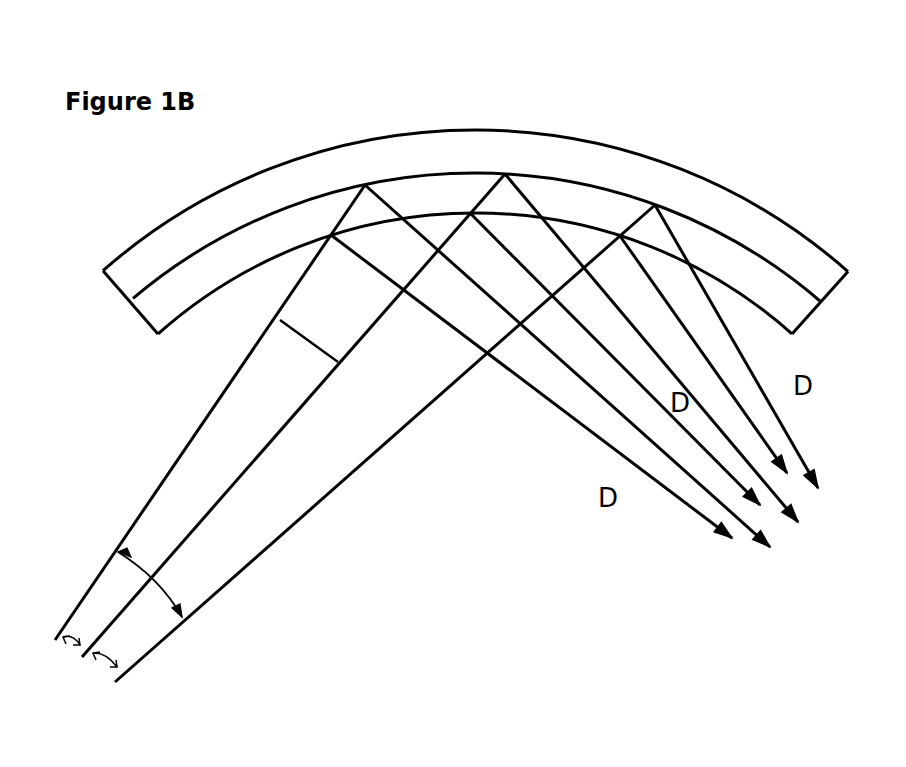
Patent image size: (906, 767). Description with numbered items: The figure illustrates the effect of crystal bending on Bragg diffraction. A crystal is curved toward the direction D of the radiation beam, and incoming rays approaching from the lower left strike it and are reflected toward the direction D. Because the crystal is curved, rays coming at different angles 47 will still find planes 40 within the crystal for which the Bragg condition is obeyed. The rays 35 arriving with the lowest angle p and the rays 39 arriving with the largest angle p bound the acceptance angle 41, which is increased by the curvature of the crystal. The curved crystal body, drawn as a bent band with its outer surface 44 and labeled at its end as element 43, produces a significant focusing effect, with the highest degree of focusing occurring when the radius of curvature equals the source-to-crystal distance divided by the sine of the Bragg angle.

The rays with the lowest angle 35 is at (436, 428).
The rays with the largest angle 39 is at (338, 362).
The planes 40 is at (457, 213).
The acceptance angle 41 is at (157, 588).
The curved reflector 43 is at (466, 218).
The outer surface 44 is at (475, 159).
The different angles 47 is at (72, 653).